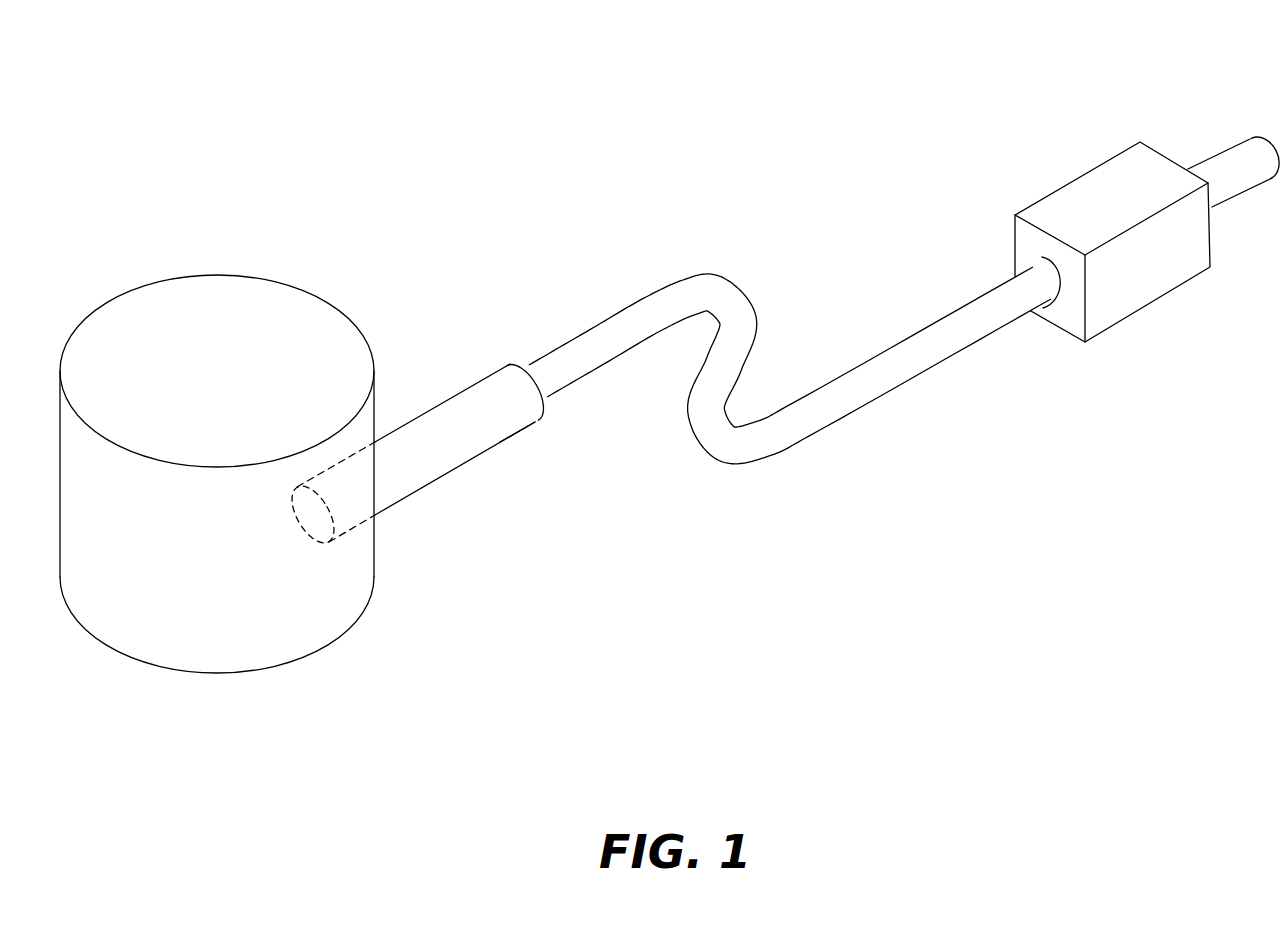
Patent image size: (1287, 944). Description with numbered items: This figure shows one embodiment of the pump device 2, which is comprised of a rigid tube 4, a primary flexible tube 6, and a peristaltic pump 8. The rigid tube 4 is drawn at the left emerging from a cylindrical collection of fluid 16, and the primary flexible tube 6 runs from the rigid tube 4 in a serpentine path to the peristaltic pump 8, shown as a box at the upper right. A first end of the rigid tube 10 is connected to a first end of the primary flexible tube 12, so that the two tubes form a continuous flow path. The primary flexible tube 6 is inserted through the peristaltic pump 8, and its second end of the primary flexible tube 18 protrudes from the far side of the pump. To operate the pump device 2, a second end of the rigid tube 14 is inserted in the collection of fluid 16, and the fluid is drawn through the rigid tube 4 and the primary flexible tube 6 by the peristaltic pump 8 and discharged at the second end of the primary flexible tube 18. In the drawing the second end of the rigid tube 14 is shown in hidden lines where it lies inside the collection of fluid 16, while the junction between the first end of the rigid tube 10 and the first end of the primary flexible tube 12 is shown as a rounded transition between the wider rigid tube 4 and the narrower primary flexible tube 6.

The pump device 2 is at (152, 120).
The rigid tube 4 is at (473, 397).
The primary flexible tube 6 is at (717, 457).
The peristaltic pump 8 is at (1110, 173).
The first end of the rigid tube 10 is at (536, 424).
The first end of the primary flexible tube 12 is at (540, 365).
The second end of the rigid tube 14 is at (317, 537).
The collection of fluid 16 is at (121, 307).
The second end of the primary flexible tube 18 is at (1245, 142).